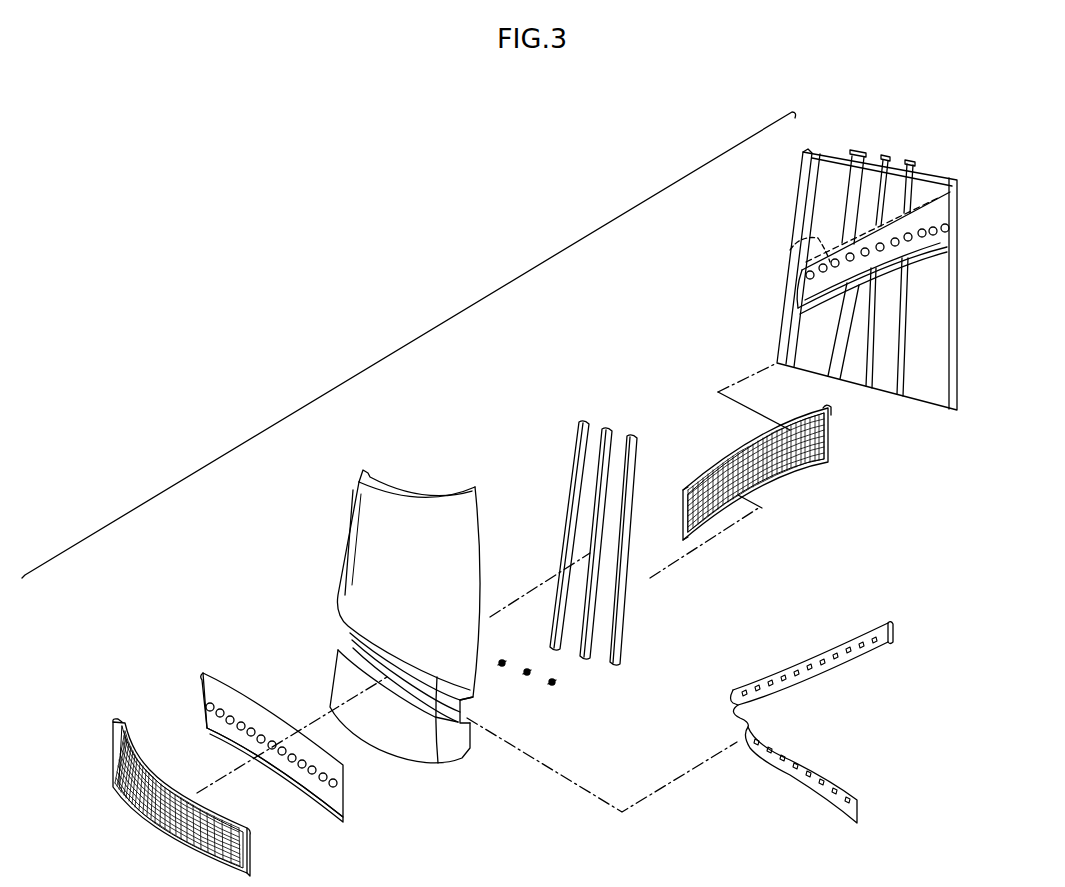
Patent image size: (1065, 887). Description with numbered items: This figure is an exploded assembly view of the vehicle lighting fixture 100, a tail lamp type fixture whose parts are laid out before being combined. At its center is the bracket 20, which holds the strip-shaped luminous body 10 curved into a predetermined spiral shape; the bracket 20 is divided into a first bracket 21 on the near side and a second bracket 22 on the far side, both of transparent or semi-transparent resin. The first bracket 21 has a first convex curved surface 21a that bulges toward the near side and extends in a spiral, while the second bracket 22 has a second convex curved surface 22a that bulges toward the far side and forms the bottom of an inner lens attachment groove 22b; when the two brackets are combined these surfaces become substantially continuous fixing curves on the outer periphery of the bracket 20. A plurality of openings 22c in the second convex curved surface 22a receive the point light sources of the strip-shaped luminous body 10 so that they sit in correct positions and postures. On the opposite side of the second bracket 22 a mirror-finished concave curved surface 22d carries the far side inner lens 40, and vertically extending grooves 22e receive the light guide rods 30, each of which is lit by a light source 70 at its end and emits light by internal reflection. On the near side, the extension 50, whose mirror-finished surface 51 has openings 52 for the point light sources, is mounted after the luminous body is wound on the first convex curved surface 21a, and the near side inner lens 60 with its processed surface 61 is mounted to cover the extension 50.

The strip-shaped luminous body 10 is at (820, 639).
The bracket 20 is at (421, 460).
The first bracket 21 is at (393, 747).
The first convex curved surface 21a is at (438, 763).
The second bracket 22 is at (963, 192).
The second convex curved surface 22a is at (967, 237).
The inner lens attachment groove 22b is at (790, 250).
The openings 22c is at (936, 240).
The concave curved surface 22d is at (918, 252).
The groove 22e is at (853, 151).
The light guide rod 30 is at (648, 430).
The far side inner lens 40 is at (793, 467).
The extension 50 is at (248, 725).
The surface 51 is at (260, 733).
The openings 52 is at (208, 720).
The near side inner lens 60 is at (155, 797).
The surface 61 is at (118, 803).
The light source 70 is at (569, 694).
The vehicle lighting fixture 100 is at (415, 340).